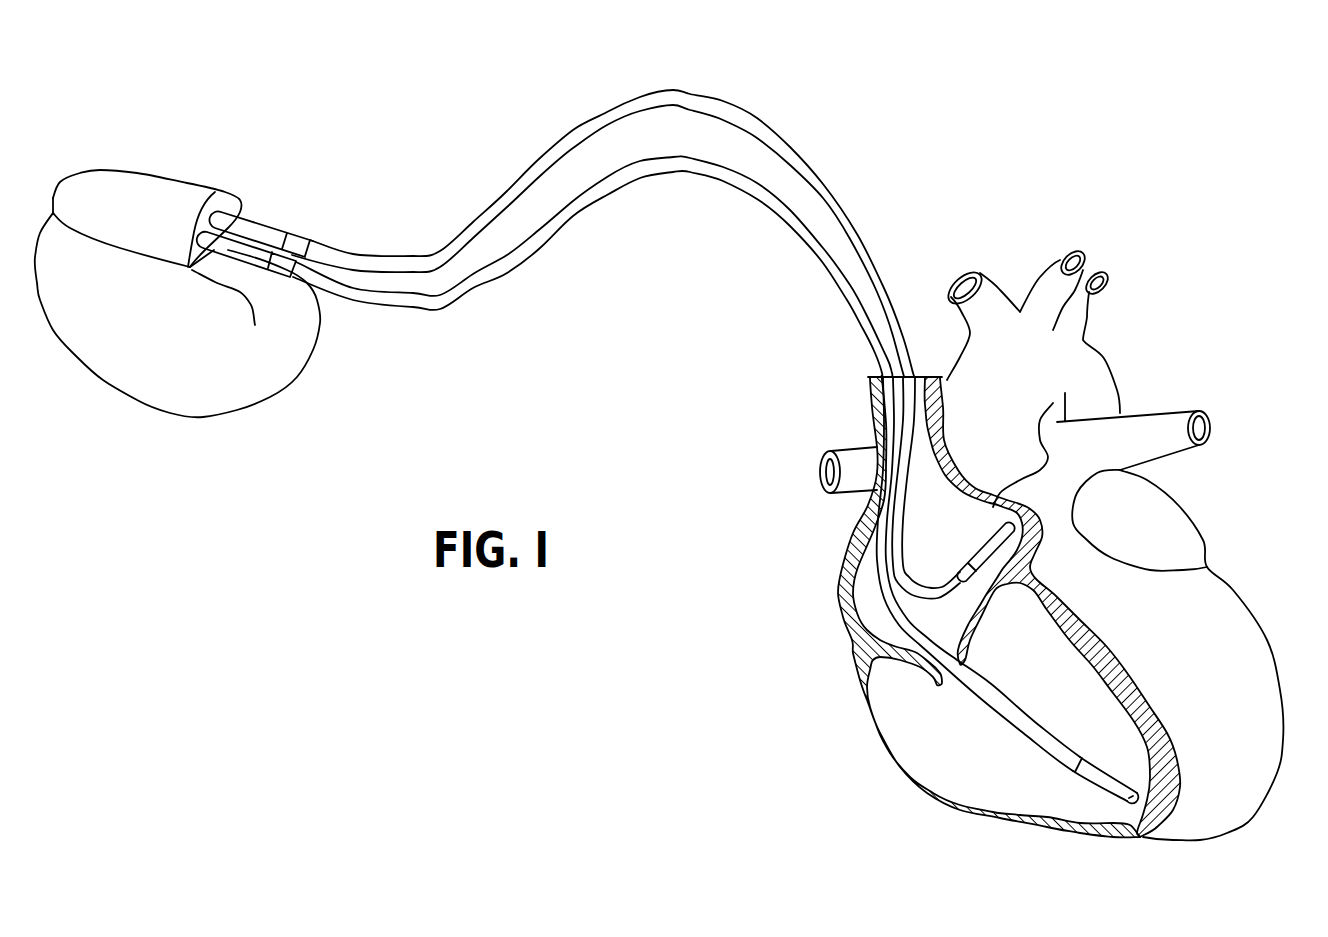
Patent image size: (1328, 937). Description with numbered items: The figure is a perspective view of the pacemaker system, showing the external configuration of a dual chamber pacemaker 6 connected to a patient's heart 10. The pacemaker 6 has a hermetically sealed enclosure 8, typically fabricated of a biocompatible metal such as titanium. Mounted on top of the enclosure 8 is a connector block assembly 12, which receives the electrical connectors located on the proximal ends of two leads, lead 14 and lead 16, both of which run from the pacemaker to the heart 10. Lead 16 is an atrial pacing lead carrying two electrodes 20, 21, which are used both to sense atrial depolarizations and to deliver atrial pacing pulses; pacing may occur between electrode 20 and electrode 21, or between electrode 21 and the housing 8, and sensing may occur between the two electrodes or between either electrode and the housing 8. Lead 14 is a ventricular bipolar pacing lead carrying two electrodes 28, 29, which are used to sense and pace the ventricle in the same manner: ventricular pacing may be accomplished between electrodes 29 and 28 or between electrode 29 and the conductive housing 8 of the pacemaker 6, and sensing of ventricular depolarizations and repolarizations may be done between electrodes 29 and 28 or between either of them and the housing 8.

The dual chamber pacemaker 6 is at (199, 297).
The hermetically sealed enclosure 8 is at (193, 407).
The human heart 10 is at (1067, 568).
The connector block assembly 12 is at (150, 186).
The ventricular bipolar pacing lead 14 is at (683, 167).
The atrial pacing lead 16 is at (663, 97).
The electrode 20 is at (967, 570).
The electrode 21 is at (1000, 490).
The electrode 28 is at (1087, 773).
The electrode 29 is at (1137, 803).